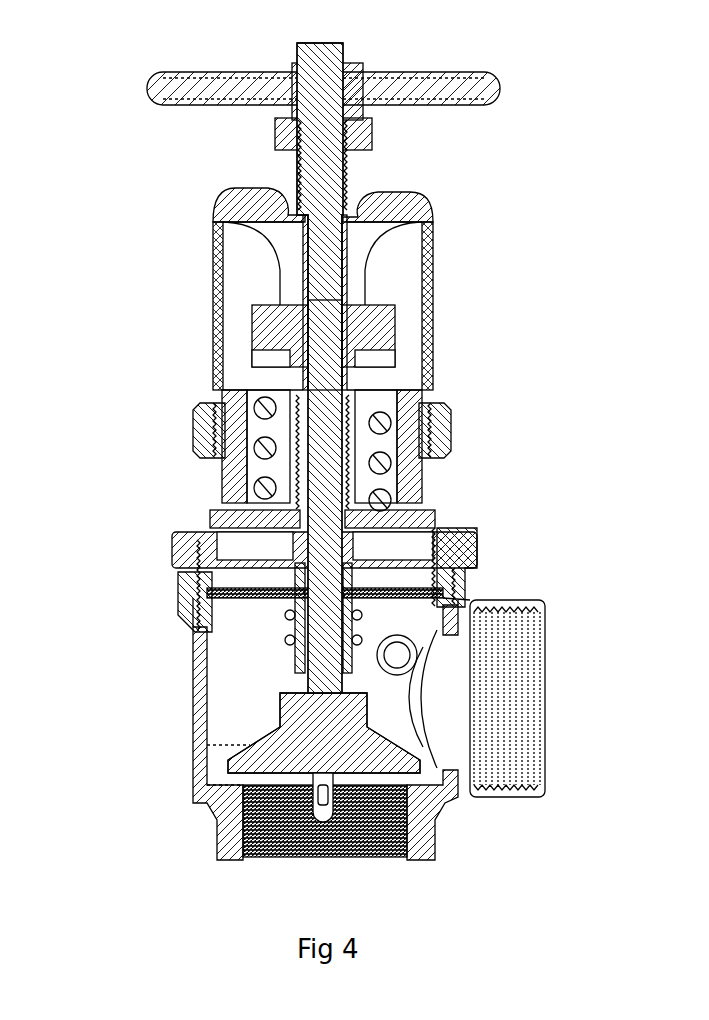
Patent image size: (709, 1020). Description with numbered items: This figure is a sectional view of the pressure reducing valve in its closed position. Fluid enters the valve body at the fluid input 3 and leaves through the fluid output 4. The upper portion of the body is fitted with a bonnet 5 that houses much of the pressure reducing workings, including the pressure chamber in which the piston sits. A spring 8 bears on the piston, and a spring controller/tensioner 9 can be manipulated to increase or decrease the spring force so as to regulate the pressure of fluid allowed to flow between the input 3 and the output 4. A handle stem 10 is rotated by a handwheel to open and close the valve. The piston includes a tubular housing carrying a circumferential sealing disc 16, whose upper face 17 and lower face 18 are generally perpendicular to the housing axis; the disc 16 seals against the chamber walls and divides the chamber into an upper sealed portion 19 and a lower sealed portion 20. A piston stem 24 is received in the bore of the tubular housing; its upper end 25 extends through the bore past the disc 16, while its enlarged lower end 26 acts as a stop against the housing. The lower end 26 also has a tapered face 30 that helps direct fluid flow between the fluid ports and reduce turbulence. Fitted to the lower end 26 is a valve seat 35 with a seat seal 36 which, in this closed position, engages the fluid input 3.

The fluid input 3 is at (285, 860).
The fluid output 4 is at (535, 765).
The bonnet 5 is at (213, 433).
The spring 8 is at (440, 440).
The spring controller/tensioner 9 is at (382, 337).
The handle stem 10 is at (323, 160).
The circumferential sealing disc 16 is at (240, 543).
The upper face 17 is at (413, 530).
The lower face 18 is at (413, 558).
The upper sealed portion 19 is at (243, 523).
The lower sealed portion 20 is at (217, 577).
The piston stem 24 is at (322, 677).
The upper end 25 is at (323, 345).
The lower end 26 is at (330, 713).
The tapered face 30 is at (350, 688).
The valve seat 35 is at (247, 743).
The seat seal 36 is at (205, 793).